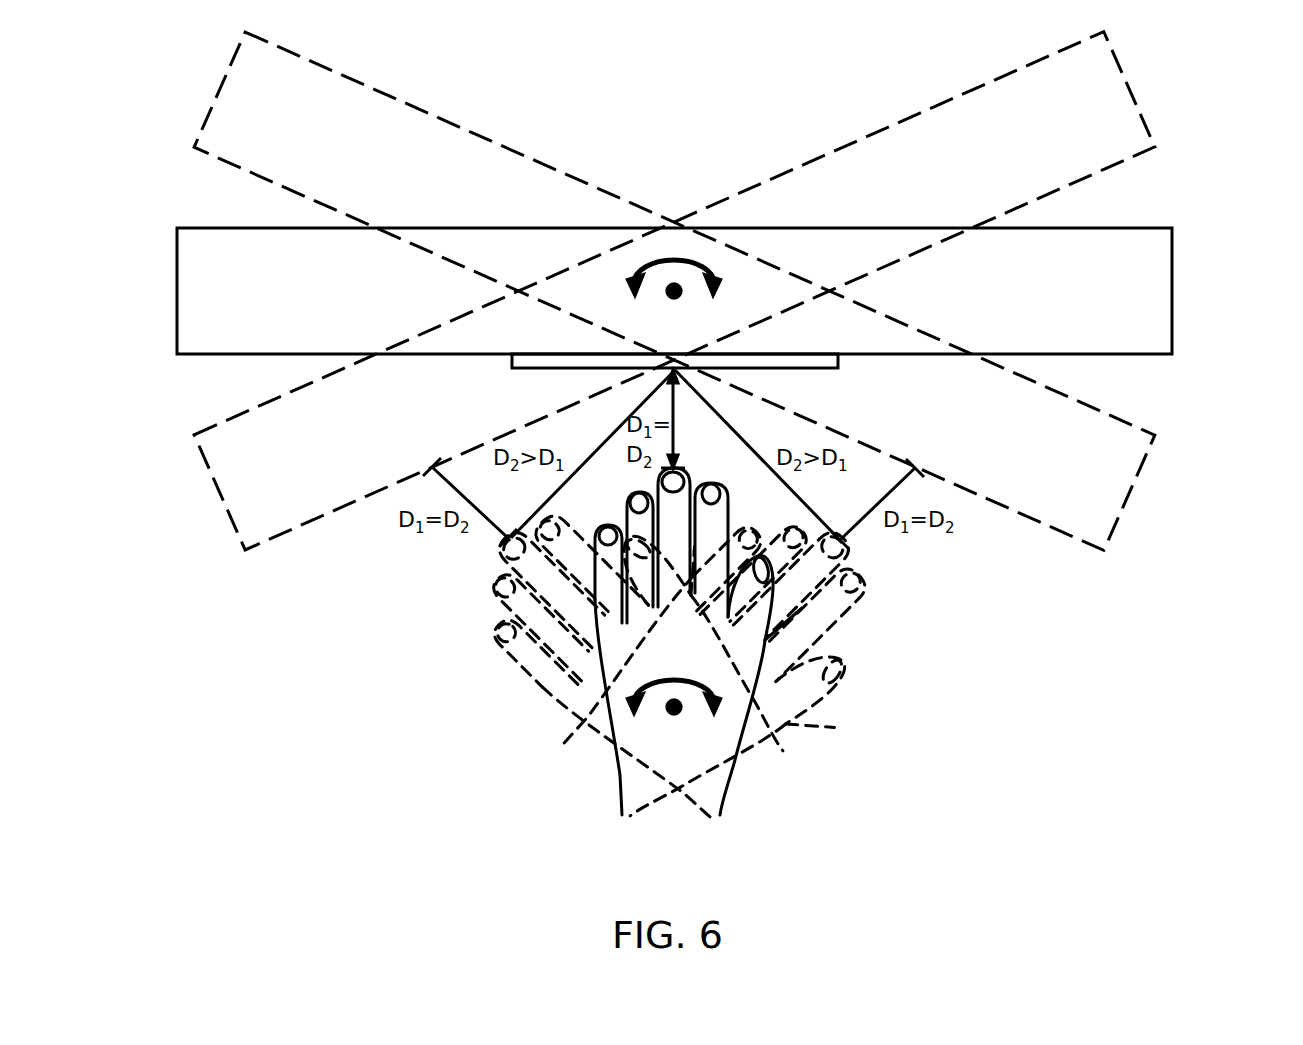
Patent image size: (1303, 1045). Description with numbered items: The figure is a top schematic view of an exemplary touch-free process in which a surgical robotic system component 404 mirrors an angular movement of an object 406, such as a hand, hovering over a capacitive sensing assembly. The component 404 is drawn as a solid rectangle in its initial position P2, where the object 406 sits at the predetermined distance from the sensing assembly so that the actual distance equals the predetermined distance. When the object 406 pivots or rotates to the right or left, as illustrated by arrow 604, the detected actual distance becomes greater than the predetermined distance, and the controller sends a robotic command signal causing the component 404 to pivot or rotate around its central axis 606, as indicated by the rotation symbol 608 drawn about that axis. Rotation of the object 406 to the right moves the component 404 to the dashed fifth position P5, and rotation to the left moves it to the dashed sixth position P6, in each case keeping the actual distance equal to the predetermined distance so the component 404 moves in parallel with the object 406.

The surgical robotic system component 404 is at (177, 291).
The object 406 is at (620, 773).
The arrow 604 is at (668, 681).
The central axis 606 is at (672, 299).
The device rotation indicator 608 is at (690, 261).
The position P2 is at (1172, 293).
The fifth position P5 is at (1128, 494).
The sixth position P6 is at (1130, 90).